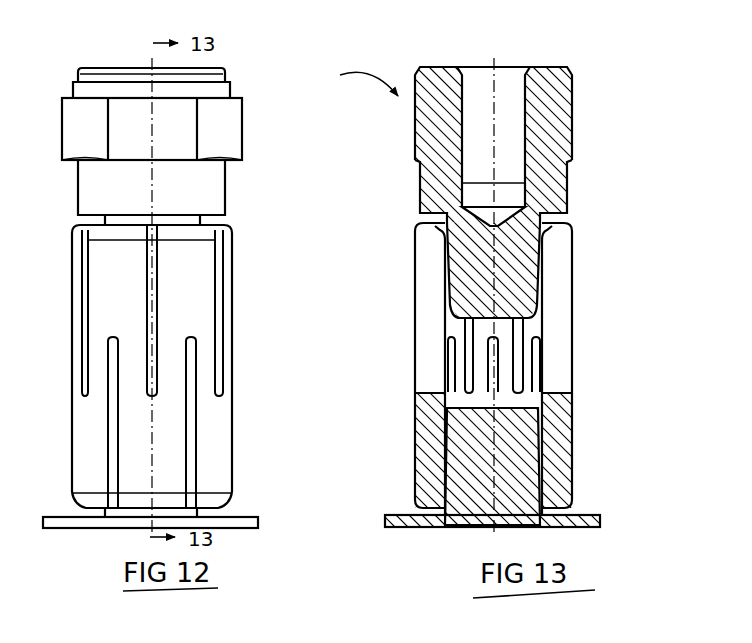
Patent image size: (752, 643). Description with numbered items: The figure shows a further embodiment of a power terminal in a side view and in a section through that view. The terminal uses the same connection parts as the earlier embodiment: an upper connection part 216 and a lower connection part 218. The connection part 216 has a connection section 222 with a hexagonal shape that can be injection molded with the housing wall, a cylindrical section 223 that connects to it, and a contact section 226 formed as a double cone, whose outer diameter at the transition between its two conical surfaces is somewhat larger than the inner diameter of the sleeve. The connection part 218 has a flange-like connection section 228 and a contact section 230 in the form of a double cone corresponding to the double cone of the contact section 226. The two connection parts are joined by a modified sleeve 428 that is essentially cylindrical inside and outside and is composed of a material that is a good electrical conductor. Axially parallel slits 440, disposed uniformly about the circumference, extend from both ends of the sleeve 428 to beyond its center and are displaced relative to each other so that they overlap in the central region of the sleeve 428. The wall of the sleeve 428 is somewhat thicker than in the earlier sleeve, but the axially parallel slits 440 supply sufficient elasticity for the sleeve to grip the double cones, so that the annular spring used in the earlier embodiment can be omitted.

In FIG. 12, the connection part 216 is at (252, 96).
In FIG. 12, the connection section 222 is at (247, 137).
In FIG. 13, the connection section 222 is at (578, 135).
In FIG. 12, the cylindrical section 223 is at (209, 197).
In FIG. 13, the cylindrical section 223 is at (572, 186).
In FIG. 13, the contact section 226 is at (515, 279).
In FIG. 12, the flange-like connection section 228 is at (259, 523).
In FIG. 13, the flange-like connection section 228 is at (601, 521).
In FIG. 12, the connection part 218 is at (244, 506).
In FIG. 13, the connection part 218 is at (584, 505).
In FIG. 13, the contact section 230 is at (515, 460).
In FIG. 12, the sleeve 428 is at (246, 311).
In FIG. 12, the axially parallel slits 440 is at (218, 258).
In FIG. 13, the axially parallel slits 440 is at (562, 328).